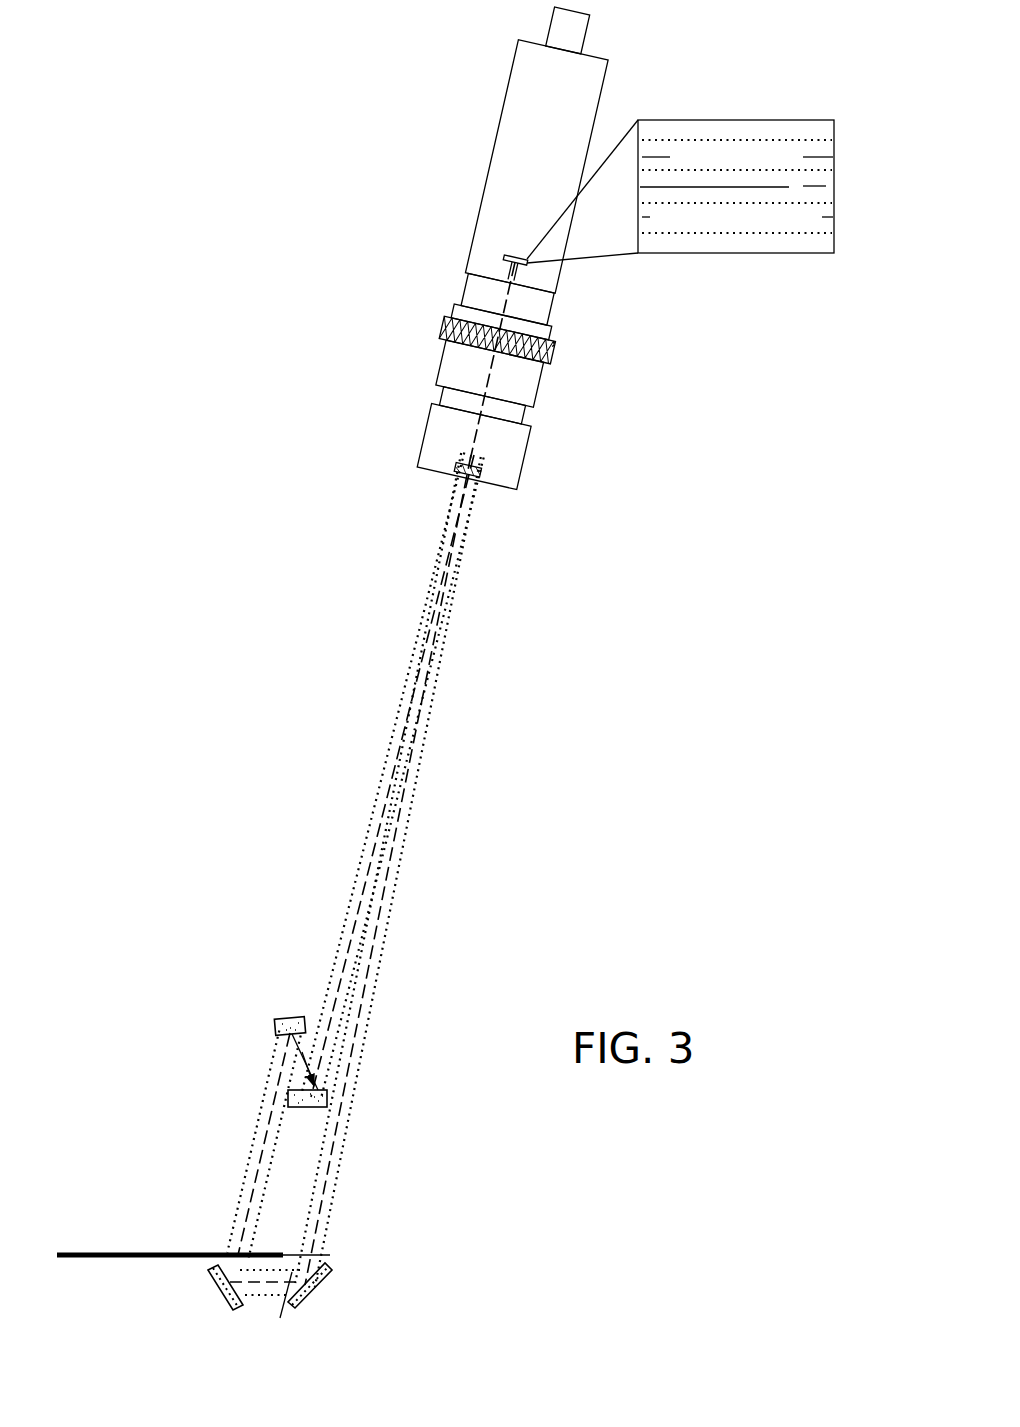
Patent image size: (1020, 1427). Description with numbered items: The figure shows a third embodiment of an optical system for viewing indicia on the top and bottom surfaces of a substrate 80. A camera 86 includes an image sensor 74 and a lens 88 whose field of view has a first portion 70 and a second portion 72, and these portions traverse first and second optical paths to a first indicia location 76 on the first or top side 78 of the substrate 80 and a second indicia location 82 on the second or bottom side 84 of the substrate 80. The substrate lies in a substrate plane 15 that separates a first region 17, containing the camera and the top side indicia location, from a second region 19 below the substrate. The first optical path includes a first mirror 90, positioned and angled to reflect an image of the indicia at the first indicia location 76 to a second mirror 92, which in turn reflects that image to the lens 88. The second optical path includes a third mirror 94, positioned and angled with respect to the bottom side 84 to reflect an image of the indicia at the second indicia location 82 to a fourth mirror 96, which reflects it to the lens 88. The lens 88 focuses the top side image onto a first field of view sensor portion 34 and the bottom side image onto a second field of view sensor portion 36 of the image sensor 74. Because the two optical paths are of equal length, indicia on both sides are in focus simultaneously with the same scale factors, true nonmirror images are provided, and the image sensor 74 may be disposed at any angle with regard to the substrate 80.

The camera 86 is at (450, 182).
The image sensor 74 is at (500, 253).
The first field of view sensor portion 34 is at (836, 136).
The second field of view sensor portion 36 is at (836, 237).
The lens 88 is at (503, 463).
The first region 17 is at (275, 764).
The first portion of field of view 70 is at (357, 915).
The second portion of field of view 72 is at (373, 948).
The first mirror 90 is at (273, 1023).
The second mirror 92 is at (287, 1098).
The first side 78 is at (118, 1250).
The first indicia location 76 is at (235, 1252).
The substrate plane 15 is at (330, 1255).
The substrate 80 is at (68, 1260).
The second side 84 is at (185, 1262).
The third mirror 94 is at (215, 1290).
The second region 19 is at (257, 1361).
The second indicia location 82 is at (240, 1261).
The fourth mirror 96 is at (320, 1290).